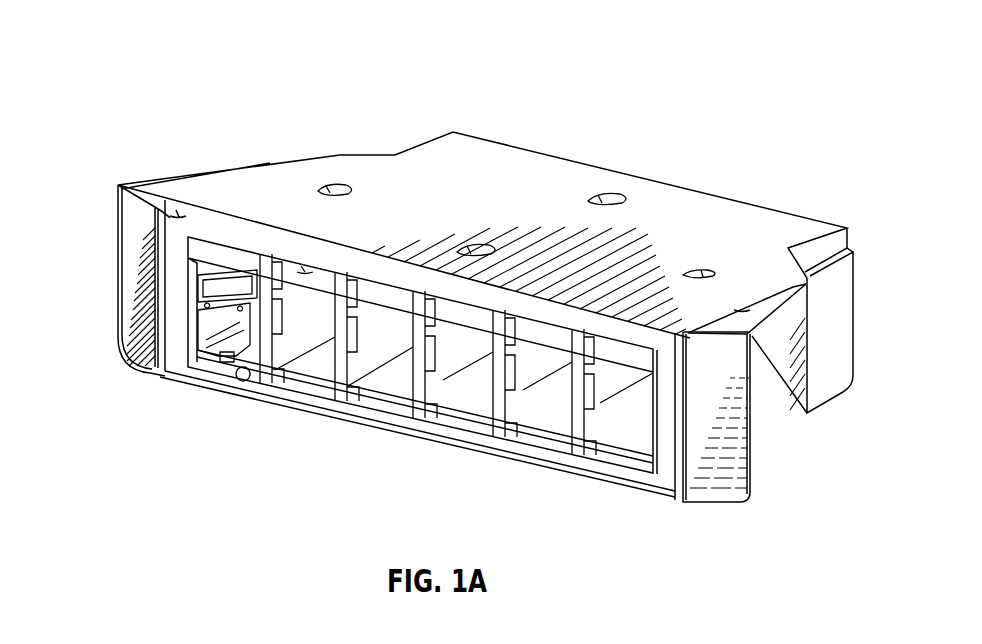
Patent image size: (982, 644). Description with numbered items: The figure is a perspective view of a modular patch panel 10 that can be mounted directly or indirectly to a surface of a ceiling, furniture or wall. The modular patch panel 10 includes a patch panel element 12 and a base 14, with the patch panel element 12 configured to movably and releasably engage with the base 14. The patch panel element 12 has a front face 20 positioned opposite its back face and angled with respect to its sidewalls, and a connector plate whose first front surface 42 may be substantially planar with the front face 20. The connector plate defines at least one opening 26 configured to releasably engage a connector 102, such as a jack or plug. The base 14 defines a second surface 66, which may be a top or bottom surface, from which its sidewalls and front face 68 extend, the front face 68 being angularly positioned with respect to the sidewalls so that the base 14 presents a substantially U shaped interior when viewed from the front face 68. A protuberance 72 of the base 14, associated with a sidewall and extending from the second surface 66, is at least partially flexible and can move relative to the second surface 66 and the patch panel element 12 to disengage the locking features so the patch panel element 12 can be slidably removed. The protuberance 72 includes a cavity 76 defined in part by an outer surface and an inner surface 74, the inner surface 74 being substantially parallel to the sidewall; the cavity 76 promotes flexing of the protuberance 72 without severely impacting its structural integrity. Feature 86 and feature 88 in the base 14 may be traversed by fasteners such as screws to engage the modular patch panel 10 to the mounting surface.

The modular patch panel 10 is at (138, 49).
The patch panel element 12 is at (663, 475).
The base 14 is at (720, 220).
The front face 20 is at (616, 479).
The opening 26 is at (287, 380).
The first front surface 42 is at (305, 270).
The second surface 66 is at (474, 192).
The front face 68 is at (178, 214).
The protuberance 72 is at (770, 419).
The inner surface 74 is at (742, 308).
The cavity 76 is at (706, 324).
The feature 86 is at (613, 194).
The feature 88 is at (337, 184).
The connector 102 is at (206, 305).